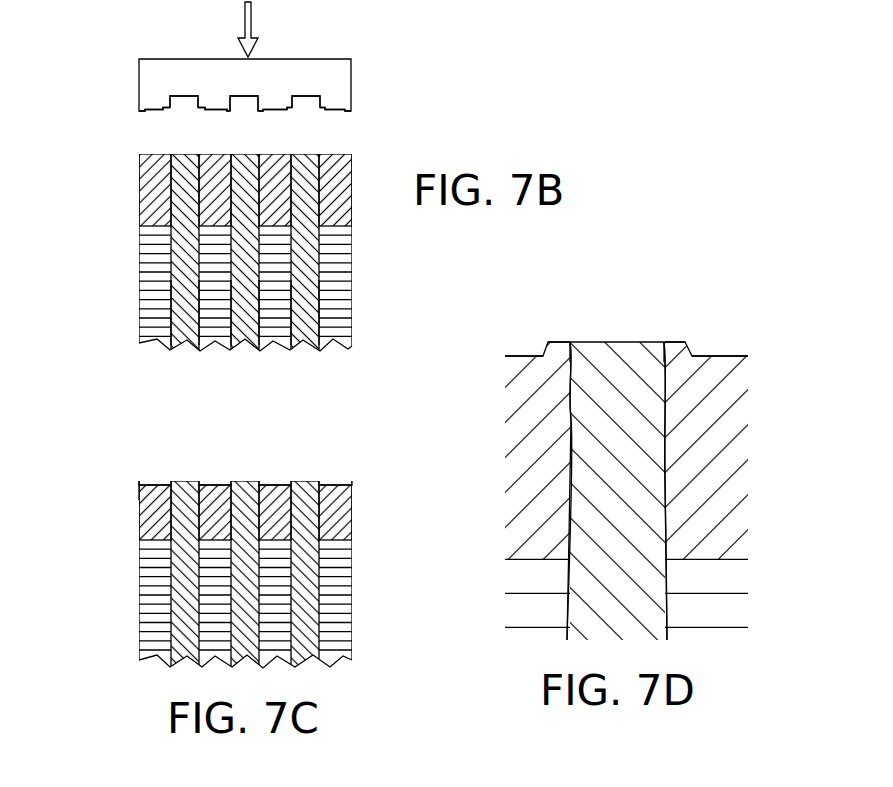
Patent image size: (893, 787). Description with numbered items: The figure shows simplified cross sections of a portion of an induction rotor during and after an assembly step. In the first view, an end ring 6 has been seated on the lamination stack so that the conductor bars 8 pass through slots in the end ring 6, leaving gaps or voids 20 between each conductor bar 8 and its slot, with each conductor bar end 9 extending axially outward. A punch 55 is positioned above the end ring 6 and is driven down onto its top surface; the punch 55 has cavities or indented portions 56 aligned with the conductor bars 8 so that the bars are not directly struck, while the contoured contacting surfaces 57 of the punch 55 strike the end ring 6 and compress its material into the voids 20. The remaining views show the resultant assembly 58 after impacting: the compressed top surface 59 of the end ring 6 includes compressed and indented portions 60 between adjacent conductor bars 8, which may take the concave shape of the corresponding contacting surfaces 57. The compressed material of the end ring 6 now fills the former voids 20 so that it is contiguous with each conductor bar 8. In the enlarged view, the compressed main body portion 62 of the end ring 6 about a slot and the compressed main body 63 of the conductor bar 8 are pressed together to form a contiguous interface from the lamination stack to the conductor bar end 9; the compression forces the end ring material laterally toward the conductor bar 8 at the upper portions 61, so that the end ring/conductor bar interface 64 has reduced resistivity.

In FIG. 7B, the punch 55 is at (347, 59).
In FIG. 7B, the cavities/indented portions 56 is at (309, 97).
In FIG. 7B, the contacting surface 57 is at (272, 112).
In FIG. 7B, the gaps/voids 20 is at (300, 190).
In FIG. 7B, the end ring 6 is at (352, 195).
In FIG. 7D, the end ring 6 is at (718, 395).
In FIG. 7B, the conductor bars 8 is at (299, 320).
In FIG. 7C, the resultant assembly 58 is at (116, 521).
In FIG. 7C, the compressed top surface 59 is at (143, 481).
In FIG. 7C, the indented portions 60 is at (337, 481).
In FIG. 7D, the indented portions 60 is at (727, 356).
In FIG. 7C, the conductor bar end 9 is at (305, 481).
In FIG. 7D, the conductor bar end 9 is at (643, 342).
In FIG. 7D, the upper portions 61 is at (678, 342).
In FIG. 7D, the compressed main body portion 62 is at (665, 413).
In FIG. 7D, the compressed main body 63 is at (665, 487).
In FIG. 7D, the end ring/conductor bar interface 64 is at (667, 343).